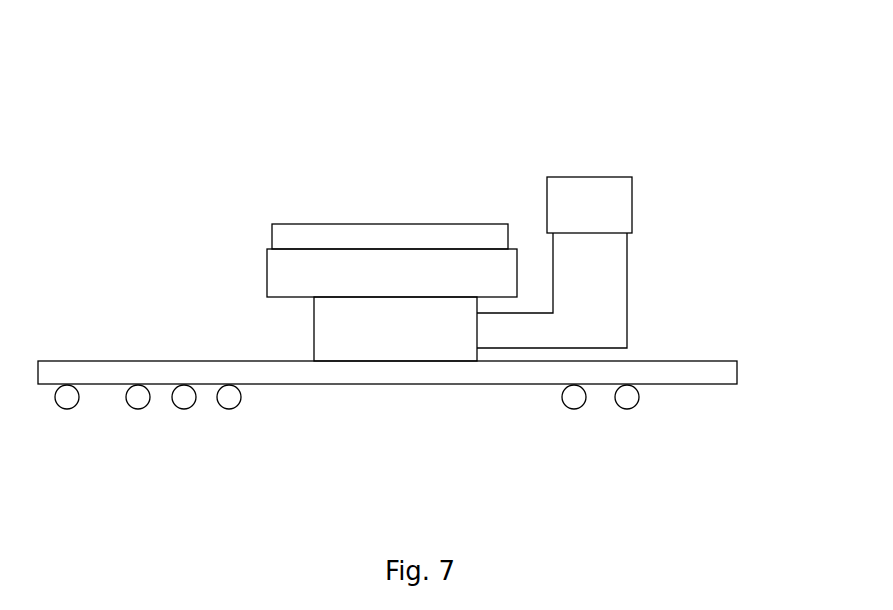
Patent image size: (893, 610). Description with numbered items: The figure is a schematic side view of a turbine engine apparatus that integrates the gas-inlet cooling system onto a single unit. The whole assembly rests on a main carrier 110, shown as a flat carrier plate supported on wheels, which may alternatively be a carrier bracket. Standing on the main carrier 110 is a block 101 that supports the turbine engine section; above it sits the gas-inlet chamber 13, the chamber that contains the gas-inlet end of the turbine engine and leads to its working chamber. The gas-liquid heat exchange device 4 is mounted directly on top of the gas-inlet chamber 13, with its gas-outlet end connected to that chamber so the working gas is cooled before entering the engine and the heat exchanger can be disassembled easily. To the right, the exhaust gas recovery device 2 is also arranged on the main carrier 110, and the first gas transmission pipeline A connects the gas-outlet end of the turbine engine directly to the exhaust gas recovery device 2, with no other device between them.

The main carrier 110 is at (688, 378).
The base body 101 is at (380, 342).
The gas-inlet chamber 13 is at (284, 273).
The gas-liquid heat exchange device 4 is at (391, 232).
The exhaust gas recovery device 2 is at (582, 193).
The first gas transmission pipeline A is at (606, 281).